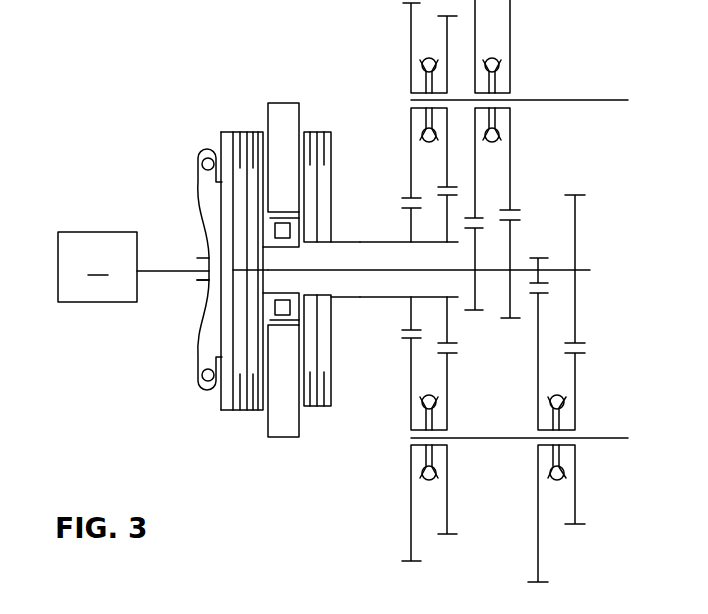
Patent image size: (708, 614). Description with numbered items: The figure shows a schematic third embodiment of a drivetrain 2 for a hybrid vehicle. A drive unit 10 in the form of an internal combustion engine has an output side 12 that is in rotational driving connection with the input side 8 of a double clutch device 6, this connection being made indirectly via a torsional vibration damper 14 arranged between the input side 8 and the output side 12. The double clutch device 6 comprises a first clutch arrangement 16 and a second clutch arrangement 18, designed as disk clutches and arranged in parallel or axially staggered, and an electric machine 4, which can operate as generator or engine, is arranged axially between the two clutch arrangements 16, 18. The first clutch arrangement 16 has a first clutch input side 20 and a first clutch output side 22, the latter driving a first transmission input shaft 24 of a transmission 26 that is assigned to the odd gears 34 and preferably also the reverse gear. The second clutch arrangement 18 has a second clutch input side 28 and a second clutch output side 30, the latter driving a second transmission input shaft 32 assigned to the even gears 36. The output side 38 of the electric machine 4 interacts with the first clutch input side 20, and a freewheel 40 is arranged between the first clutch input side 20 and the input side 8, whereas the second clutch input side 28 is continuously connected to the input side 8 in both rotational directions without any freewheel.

The drivetrain 2 is at (48, 102).
The electric machine 4 is at (290, 102).
The double clutch device 6 is at (236, 127).
The input side 8 is at (205, 195).
The drive unit 10 is at (97, 267).
The output side 12 is at (178, 268).
The torsional vibration damper 14 is at (208, 312).
The first clutch arrangement 16 is at (317, 416).
The second clutch arrangement 18 is at (213, 301).
The first clutch input side 20 is at (281, 322).
The first clutch output side 22 is at (328, 298).
The first transmission input shaft 24 is at (385, 297).
The transmission 26 is at (530, 303).
The second clutch input side 28 is at (221, 134).
The second clutch output side 30 is at (262, 276).
The second transmission input shaft 32 is at (357, 270).
The odd gears 34 is at (514, 78).
The even gears 36 is at (586, 392).
The output side 38 is at (275, 217).
The freewheel 40 is at (292, 231).